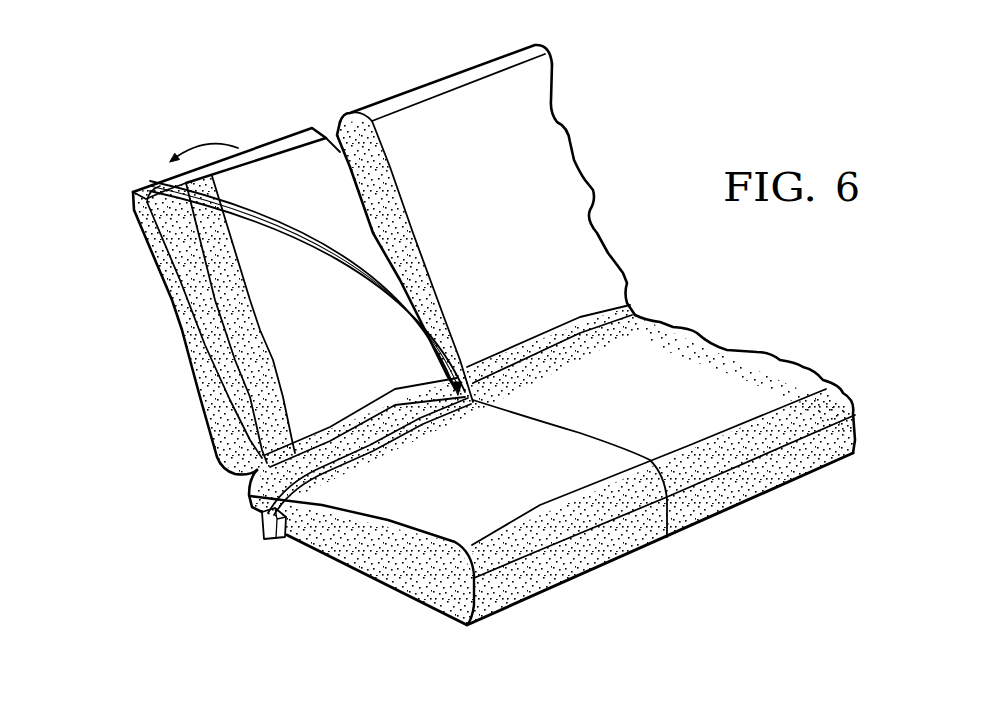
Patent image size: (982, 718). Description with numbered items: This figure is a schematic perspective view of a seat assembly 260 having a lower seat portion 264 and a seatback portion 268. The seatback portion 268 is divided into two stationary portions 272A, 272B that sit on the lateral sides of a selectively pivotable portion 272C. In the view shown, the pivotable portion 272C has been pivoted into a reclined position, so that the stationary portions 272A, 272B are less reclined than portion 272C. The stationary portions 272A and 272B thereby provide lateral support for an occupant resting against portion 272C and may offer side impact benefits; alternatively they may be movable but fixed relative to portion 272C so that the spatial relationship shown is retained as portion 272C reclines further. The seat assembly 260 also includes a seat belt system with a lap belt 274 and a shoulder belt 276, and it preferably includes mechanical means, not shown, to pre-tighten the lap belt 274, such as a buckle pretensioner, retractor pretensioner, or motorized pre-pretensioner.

The seat assembly 260 is at (680, 138).
The lower seat portion 264 is at (580, 566).
The seatback portion 268 is at (418, 85).
The stationary portion 272A is at (177, 262).
The stationary portion 272B is at (505, 62).
The selectively pivotable portion 272C is at (295, 132).
The lap belt 274 is at (362, 462).
The shoulder belt 276 is at (307, 237).